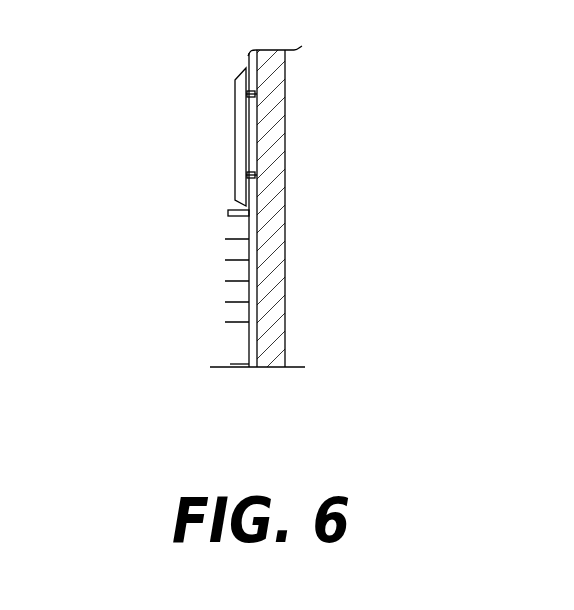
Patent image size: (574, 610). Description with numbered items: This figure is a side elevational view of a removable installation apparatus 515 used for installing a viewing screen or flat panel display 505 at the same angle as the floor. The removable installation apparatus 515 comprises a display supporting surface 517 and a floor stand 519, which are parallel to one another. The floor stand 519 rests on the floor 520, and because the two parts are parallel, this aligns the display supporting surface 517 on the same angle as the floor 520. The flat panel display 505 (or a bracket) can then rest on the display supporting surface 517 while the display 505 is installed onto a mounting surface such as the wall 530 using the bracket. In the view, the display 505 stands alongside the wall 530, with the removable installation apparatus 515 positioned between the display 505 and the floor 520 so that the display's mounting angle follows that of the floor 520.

The flat panel display 505 is at (235, 165).
The removable installation apparatus 515 is at (248, 268).
The display supporting surface 517 is at (228, 213).
The floor stand 519 is at (231, 364).
The floor 520 is at (213, 370).
The wall 530 is at (285, 237).